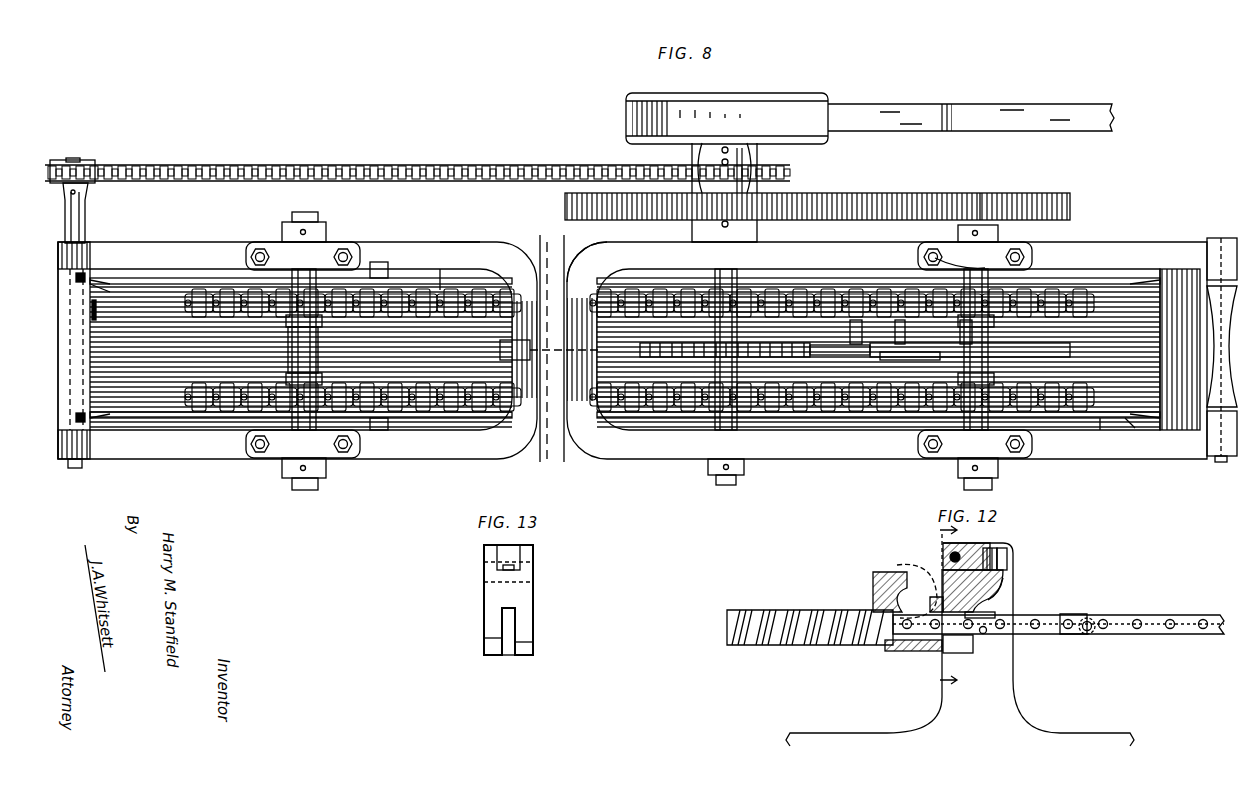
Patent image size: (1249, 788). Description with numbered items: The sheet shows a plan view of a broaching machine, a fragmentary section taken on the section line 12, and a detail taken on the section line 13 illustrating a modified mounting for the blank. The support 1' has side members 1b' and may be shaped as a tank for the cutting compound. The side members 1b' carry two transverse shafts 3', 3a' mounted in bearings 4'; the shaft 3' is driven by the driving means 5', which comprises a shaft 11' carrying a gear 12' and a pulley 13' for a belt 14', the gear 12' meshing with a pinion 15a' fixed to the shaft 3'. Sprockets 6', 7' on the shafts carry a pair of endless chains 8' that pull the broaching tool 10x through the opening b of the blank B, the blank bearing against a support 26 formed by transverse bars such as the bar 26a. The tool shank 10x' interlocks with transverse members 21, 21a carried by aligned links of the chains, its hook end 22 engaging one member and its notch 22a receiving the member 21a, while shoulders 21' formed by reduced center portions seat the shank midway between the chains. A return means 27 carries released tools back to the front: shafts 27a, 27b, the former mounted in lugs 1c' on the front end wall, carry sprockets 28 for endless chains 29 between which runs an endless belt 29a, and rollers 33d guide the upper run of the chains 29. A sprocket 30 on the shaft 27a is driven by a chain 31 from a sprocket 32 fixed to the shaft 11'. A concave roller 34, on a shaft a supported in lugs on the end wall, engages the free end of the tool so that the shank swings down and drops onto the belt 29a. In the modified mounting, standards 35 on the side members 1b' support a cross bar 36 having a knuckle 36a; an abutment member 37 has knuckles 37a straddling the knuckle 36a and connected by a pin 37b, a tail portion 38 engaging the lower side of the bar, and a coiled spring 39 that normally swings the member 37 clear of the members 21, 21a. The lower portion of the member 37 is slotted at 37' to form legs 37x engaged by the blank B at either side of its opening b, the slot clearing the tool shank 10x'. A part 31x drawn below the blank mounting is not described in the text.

In FIG. 8, the support 1' is at (402, 457).
In FIG. 8, the side members 1b' is at (549, 351).
In FIG. 12, the side members 1b' is at (864, 721).
In FIG. 8, the lugs 1c' is at (102, 352).
In FIG. 8, the transverse shaft 3' is at (970, 348).
In FIG. 8, the transverse shaft 3a' is at (274, 350).
In FIG. 8, the bearings 4' is at (298, 354).
In FIG. 8, the driving means 5' is at (817, 187).
In FIG. 8, the sprockets 6' is at (960, 261).
In FIG. 8, the sprockets 7' is at (304, 359).
In FIG. 8, the endless chains 8' is at (443, 350).
In FIG. 8, the broaching tool 10x is at (725, 340).
In FIG. 12, the broaching tool 10x is at (810, 615).
In FIG. 8, the tool shank 10x' is at (830, 362).
In FIG. 12, the tool shank 10x' is at (1070, 608).
In FIG. 8, the shaft 11' is at (726, 484).
In FIG. 8, the section line 12 is at (484, 350).
In FIG. 8, the gear 12' is at (790, 206).
In FIG. 12, the section line 13 is at (944, 611).
In FIG. 8, the pulley 13' is at (704, 118).
In FIG. 8, the belt 14' is at (971, 104).
In FIG. 8, the pinion 15a' is at (961, 191).
In FIG. 8, the transverse member 21 is at (910, 347).
In FIG. 12, the transverse member 21 is at (1058, 613).
In FIG. 8, the shoulders 21' is at (961, 332).
In FIG. 8, the transverse member 21a is at (855, 330).
In FIG. 12, the transverse member 21a is at (983, 637).
In FIG. 12, the chain pin 22 is at (1087, 633).
In FIG. 12, the notch 22a is at (983, 626).
In FIG. 8, the support 26 is at (548, 250).
In FIG. 8, the transverse bar 26a is at (574, 258).
In FIG. 8, the return means 27 is at (1105, 422).
In FIG. 8, the shaft 27a is at (75, 468).
In FIG. 8, the shaft 27b is at (1138, 430).
In FIG. 8, the sprockets 28 is at (90, 282).
In FIG. 8, the endless chains 29 is at (200, 282).
In FIG. 8, the endless belt 29a is at (155, 300).
In FIG. 8, the sprocket 30 is at (80, 166).
In FIG. 8, the chain 31 is at (262, 170).
In FIG. 12, the key 31x is at (942, 655).
In FIG. 8, the sprocket 32 is at (780, 172).
In FIG. 8, the rollers 33d is at (393, 351).
In FIG. 8, the release device 34 is at (1195, 498).
In FIG. 12, the standards 35 is at (1016, 683).
In FIG. 12, the cross bar 36 is at (1013, 548).
In FIG. 12, the knuckle 36a is at (950, 555).
In FIG. 13, the abutment member 37 is at (523, 600).
In FIG. 12, the abutment member 37 is at (1002, 580).
In FIG. 13, the slot 37' is at (534, 627).
In FIG. 12, the slot 37' is at (1019, 586).
In FIG. 13, the knuckles 37a is at (498, 545).
In FIG. 12, the pin 37b is at (942, 553).
In FIG. 13, the legs 37x is at (495, 638).
In FIG. 12, the tail portion 38 is at (1005, 587).
In FIG. 12, the coiled spring 39 is at (989, 547).
In FIG. 12, the blank B is at (883, 648).
In FIG. 12, the opening b is at (910, 652).
In FIG. 8, the roller axle a is at (1221, 480).